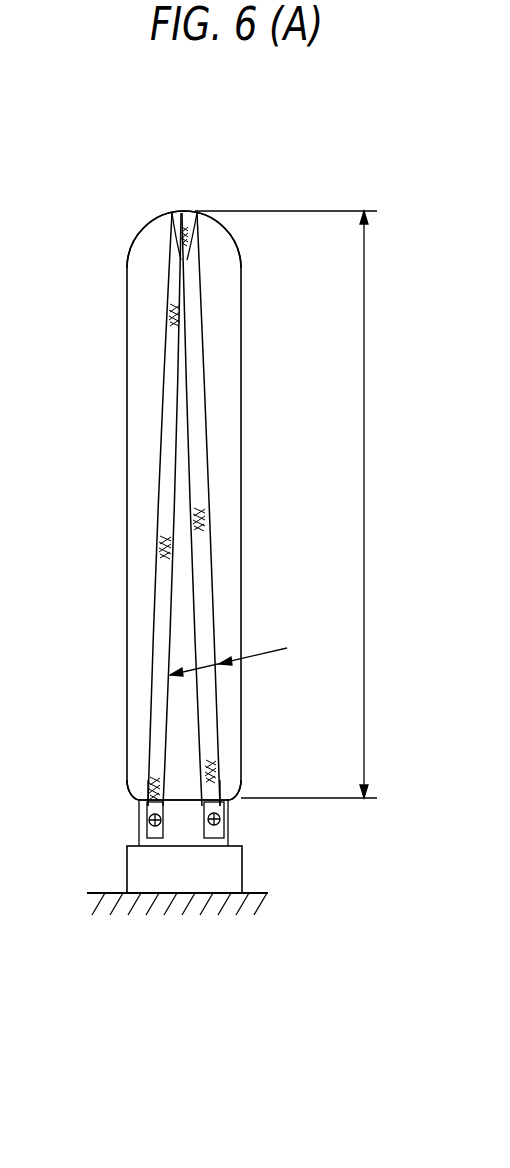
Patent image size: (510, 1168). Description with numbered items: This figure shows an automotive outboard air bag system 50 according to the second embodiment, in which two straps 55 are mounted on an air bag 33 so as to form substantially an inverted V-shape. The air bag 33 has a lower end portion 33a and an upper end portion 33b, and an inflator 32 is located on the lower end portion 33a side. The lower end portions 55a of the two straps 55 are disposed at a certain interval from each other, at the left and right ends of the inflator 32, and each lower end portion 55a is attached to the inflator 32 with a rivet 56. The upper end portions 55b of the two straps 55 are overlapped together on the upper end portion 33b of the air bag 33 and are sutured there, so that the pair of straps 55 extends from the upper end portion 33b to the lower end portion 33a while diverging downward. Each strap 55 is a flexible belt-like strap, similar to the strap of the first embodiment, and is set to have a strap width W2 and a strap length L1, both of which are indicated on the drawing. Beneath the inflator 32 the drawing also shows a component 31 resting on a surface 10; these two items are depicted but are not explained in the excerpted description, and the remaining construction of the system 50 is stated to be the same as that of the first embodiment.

The installation floor surface 10 is at (200, 907).
The base 31 is at (127, 868).
The inflator 32 is at (140, 818).
The air bag 33 is at (125, 423).
The lower end portion of the air bag 33a is at (135, 781).
The upper end portion of the air bag 33b is at (133, 243).
The automotive outboard air bag system 50 is at (137, 184).
The strap 55 is at (203, 473).
The lower end portion of the strap 55a is at (160, 806).
The upper end portion of the strap 55b is at (172, 213).
The rivet 56 is at (225, 818).
The strap length L1 is at (286, 504).
The strap width W2 is at (245, 656).